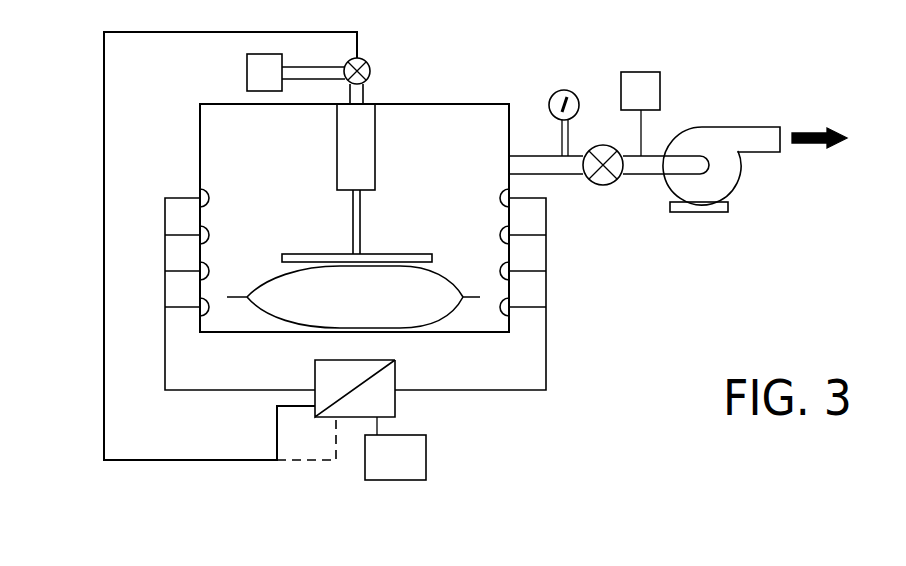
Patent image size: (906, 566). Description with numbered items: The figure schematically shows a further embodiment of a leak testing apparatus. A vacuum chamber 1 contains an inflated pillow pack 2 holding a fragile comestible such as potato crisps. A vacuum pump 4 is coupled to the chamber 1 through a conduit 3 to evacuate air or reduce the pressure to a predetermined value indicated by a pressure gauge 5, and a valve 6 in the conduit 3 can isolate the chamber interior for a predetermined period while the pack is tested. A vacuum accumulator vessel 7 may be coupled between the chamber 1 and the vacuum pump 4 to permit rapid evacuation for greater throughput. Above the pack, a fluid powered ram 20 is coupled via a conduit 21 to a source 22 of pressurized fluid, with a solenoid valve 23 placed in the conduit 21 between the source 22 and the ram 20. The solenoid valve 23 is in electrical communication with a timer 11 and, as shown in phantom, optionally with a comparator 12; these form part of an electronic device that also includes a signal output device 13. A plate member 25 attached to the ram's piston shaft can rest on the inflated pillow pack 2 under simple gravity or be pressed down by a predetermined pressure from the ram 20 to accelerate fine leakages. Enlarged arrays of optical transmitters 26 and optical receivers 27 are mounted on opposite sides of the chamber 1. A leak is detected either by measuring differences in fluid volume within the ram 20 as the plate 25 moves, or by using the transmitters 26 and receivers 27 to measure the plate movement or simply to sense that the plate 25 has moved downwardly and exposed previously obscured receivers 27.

The vacuum chamber 1 is at (437, 104).
The pillow pack 2 is at (447, 308).
The conduit 3 is at (545, 163).
The vacuum pump 4 is at (722, 140).
The pressure gauge 5 is at (560, 91).
The valve 6 is at (605, 185).
The vacuum accumulator vessel 7 is at (640, 78).
The timer 11 is at (330, 382).
The comparator 12 is at (383, 402).
The signal output device 13 is at (412, 471).
The fluid powered ram 20 is at (364, 143).
The conduit 21 is at (303, 80).
The source of pressurized fluid 22 is at (265, 73).
The solenoid valve 23 is at (347, 80).
The plate member 25 is at (398, 253).
The optical transmitters 26 is at (200, 268).
The optical receivers 27 is at (509, 275).